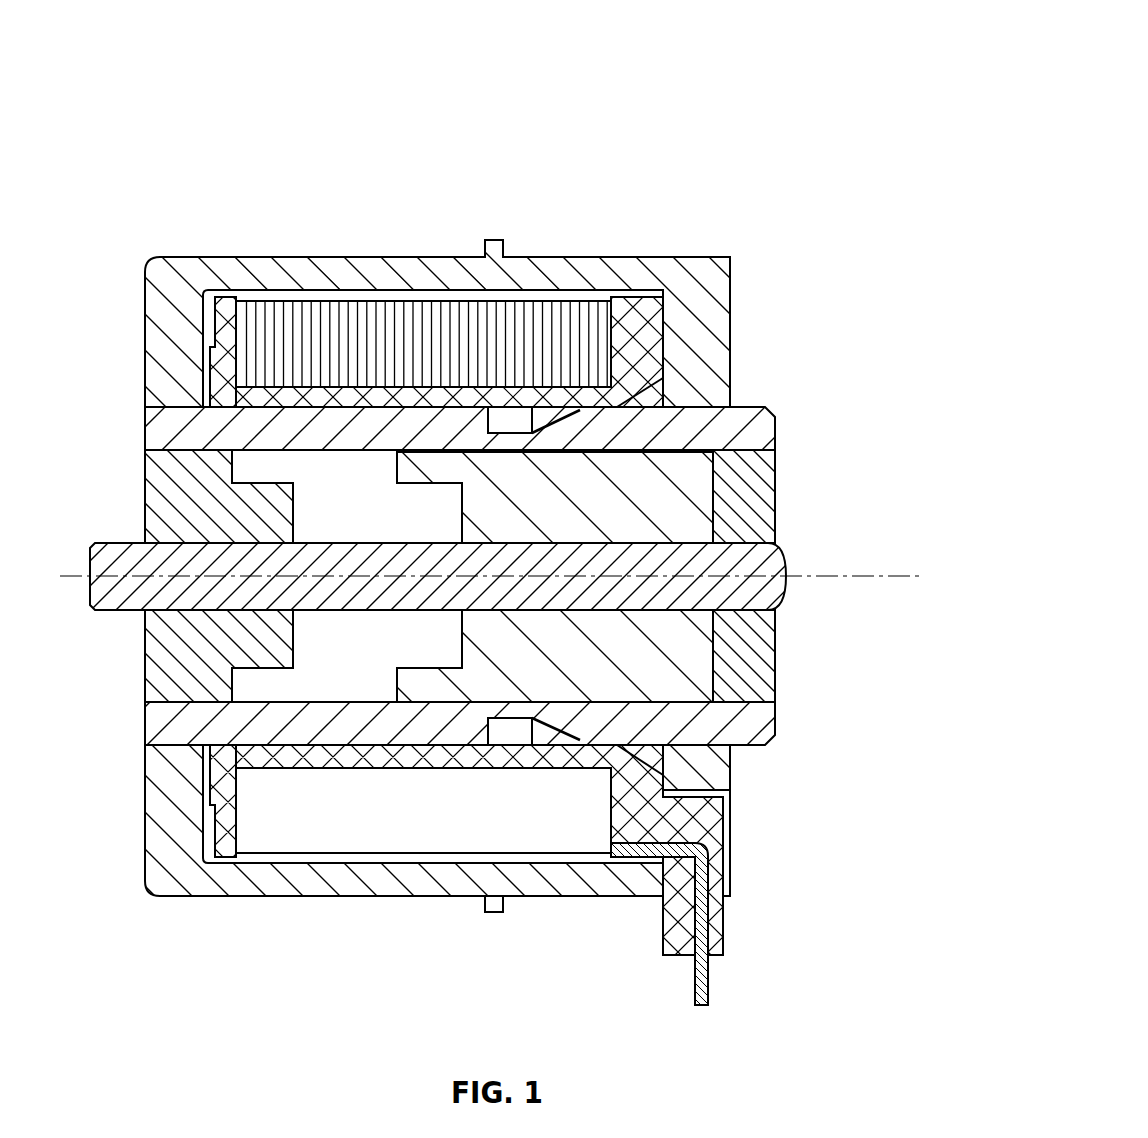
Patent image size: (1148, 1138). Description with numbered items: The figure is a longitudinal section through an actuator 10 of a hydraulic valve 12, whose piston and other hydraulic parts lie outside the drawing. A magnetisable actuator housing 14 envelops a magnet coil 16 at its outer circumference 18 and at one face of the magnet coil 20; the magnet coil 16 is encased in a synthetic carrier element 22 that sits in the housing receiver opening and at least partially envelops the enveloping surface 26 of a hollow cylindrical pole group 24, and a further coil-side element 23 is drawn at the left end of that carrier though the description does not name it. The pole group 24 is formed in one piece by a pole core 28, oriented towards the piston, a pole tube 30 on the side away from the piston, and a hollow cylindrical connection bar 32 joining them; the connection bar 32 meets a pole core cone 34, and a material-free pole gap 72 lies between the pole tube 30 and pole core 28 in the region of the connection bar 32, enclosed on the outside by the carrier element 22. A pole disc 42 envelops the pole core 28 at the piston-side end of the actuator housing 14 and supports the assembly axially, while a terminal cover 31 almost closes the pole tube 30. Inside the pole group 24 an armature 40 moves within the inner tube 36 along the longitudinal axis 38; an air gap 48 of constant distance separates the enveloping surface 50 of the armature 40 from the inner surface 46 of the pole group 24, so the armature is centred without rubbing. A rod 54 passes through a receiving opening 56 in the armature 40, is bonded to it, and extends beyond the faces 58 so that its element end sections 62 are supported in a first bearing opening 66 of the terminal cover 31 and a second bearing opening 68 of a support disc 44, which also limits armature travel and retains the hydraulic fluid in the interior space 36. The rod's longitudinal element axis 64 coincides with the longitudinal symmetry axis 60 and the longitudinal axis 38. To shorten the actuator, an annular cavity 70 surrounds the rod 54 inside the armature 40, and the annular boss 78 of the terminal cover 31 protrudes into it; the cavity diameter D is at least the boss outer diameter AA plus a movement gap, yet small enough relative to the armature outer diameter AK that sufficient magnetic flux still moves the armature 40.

The actuator 10 is at (603, 146).
The hydraulic valve 12 is at (762, 184).
The actuator housing 14 is at (532, 246).
The magnet coil 16 is at (375, 286).
The outer circumference 18 is at (468, 300).
The face of the magnet coil 20 is at (213, 338).
The carrier element 22 is at (630, 283).
The left bobbin flange 23 is at (222, 295).
The pole group 24 is at (798, 406).
The enveloping surface 26 is at (197, 745).
The pole core 28 is at (630, 723).
The pole tube 30 is at (340, 730).
The terminal cover 31 is at (133, 478).
The connection bar 32 is at (507, 722).
The pole core cone 34 is at (570, 725).
The inner tube 36 is at (325, 518).
The longitudinal axis 38 is at (509, 617).
The armature 40 is at (519, 503).
The pole disc 42 is at (722, 291).
The support disc 44 is at (790, 480).
The inner surface 46 is at (325, 465).
The air gap 48 is at (429, 475).
The enveloping surface of the armature 50 is at (450, 722).
The rod 54 is at (802, 562).
The receiving opening 56 is at (632, 552).
The face of the armature 58 is at (395, 655).
The longitudinal symmetry axis 60 is at (509, 617).
The element end sections 62 is at (162, 560).
The longitudinal element axis 64 is at (877, 580).
The first bearing opening 66 is at (158, 600).
The second bearing opening 68 is at (740, 552).
The cavity 70 is at (417, 526).
The pole gap 72 is at (538, 737).
The annular boss 78 is at (262, 760).
The outer diameter of the boss AA is at (249, 495).
The diameter of the cavity D is at (412, 495).
The outer diameter of the armature AK is at (578, 465).